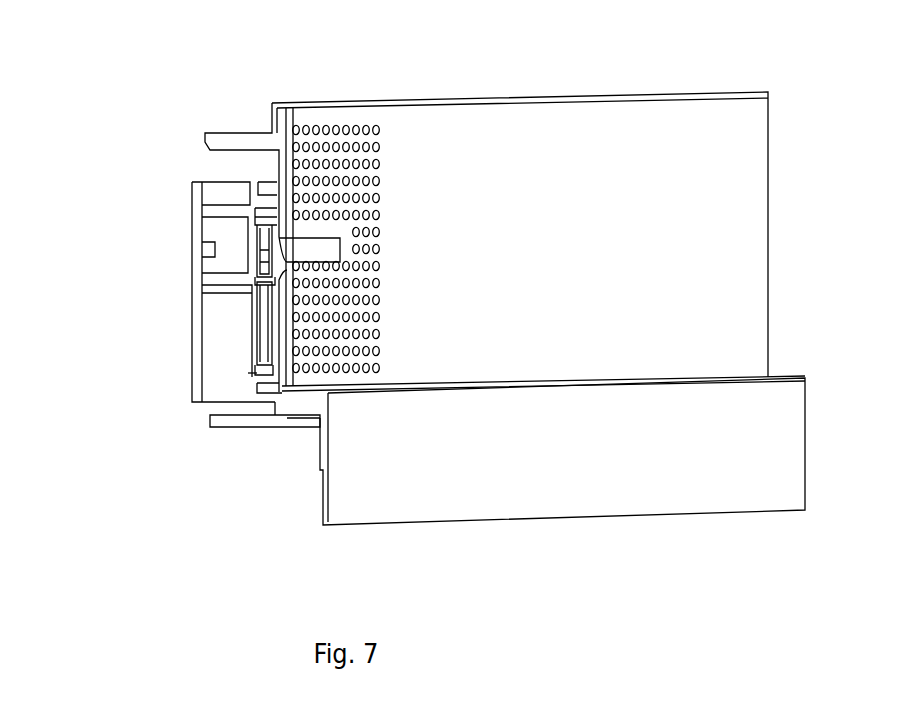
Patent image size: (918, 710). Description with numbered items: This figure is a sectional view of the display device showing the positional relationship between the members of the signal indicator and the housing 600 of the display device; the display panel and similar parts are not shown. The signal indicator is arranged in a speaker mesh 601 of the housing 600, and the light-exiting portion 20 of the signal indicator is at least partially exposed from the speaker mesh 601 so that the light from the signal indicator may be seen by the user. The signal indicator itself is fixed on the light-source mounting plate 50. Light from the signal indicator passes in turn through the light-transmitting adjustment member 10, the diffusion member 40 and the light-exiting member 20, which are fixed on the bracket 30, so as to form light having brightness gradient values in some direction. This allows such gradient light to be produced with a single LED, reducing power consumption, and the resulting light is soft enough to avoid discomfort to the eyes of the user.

The housing 600 is at (262, 130).
The speaker mesh 601 is at (318, 128).
The light-exiting portion 20 is at (288, 262).
The light-source mounting plate 50 is at (194, 378).
The diffusion member 40 is at (258, 240).
The light-transmitting adjustment member 10 is at (258, 262).
The bracket 30 is at (252, 367).